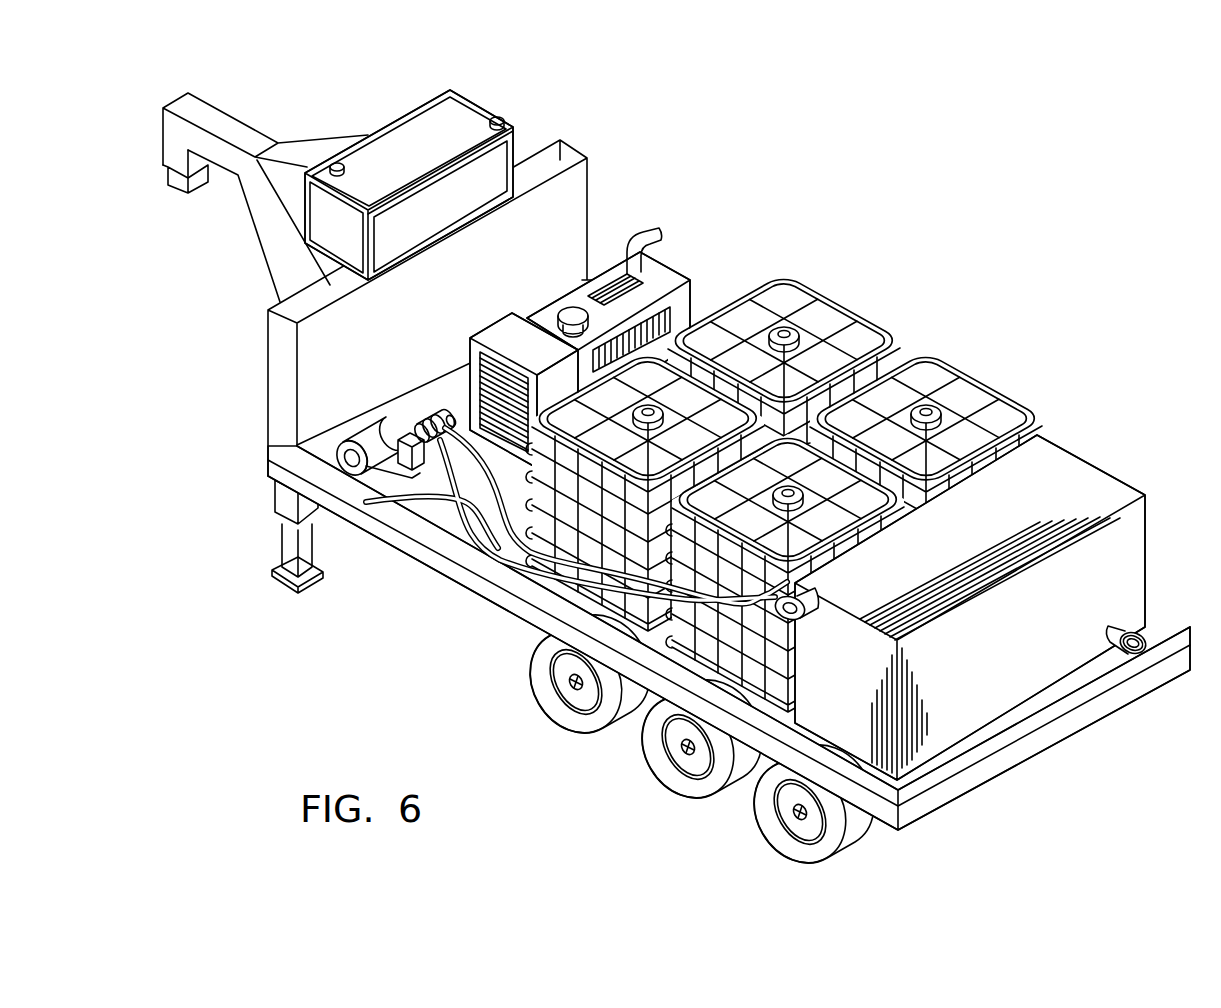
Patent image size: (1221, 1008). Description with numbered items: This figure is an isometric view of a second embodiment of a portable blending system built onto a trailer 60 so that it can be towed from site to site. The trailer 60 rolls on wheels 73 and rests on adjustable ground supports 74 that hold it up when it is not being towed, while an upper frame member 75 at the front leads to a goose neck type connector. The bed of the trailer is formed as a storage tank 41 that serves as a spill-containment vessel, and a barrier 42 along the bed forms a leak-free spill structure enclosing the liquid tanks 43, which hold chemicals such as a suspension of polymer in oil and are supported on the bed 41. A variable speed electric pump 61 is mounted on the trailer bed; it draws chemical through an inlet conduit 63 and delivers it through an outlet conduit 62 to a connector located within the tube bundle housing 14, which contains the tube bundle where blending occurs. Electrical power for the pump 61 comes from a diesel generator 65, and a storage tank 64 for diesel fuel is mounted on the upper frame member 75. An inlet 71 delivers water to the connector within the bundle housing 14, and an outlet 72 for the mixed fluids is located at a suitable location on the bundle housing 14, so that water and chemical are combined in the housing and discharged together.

The tube bundle housing 14 is at (1038, 492).
The storage tank 41 is at (477, 583).
The barrier 42 is at (427, 530).
The liquid tanks 43 is at (812, 516).
The trailer 60 is at (413, 653).
The variable speed electric pump 61 is at (407, 413).
The outlet conduit 62 is at (370, 505).
The inlet conduit 63 is at (460, 408).
The storage tank for diesel fuel 64 is at (403, 152).
The diesel generator 65 is at (657, 280).
The inlet 71 is at (800, 597).
The outlet 72 is at (1138, 632).
The wheels 73 is at (777, 840).
The adjustable ground supports 74 is at (289, 550).
The upper frame member 75 is at (213, 122).